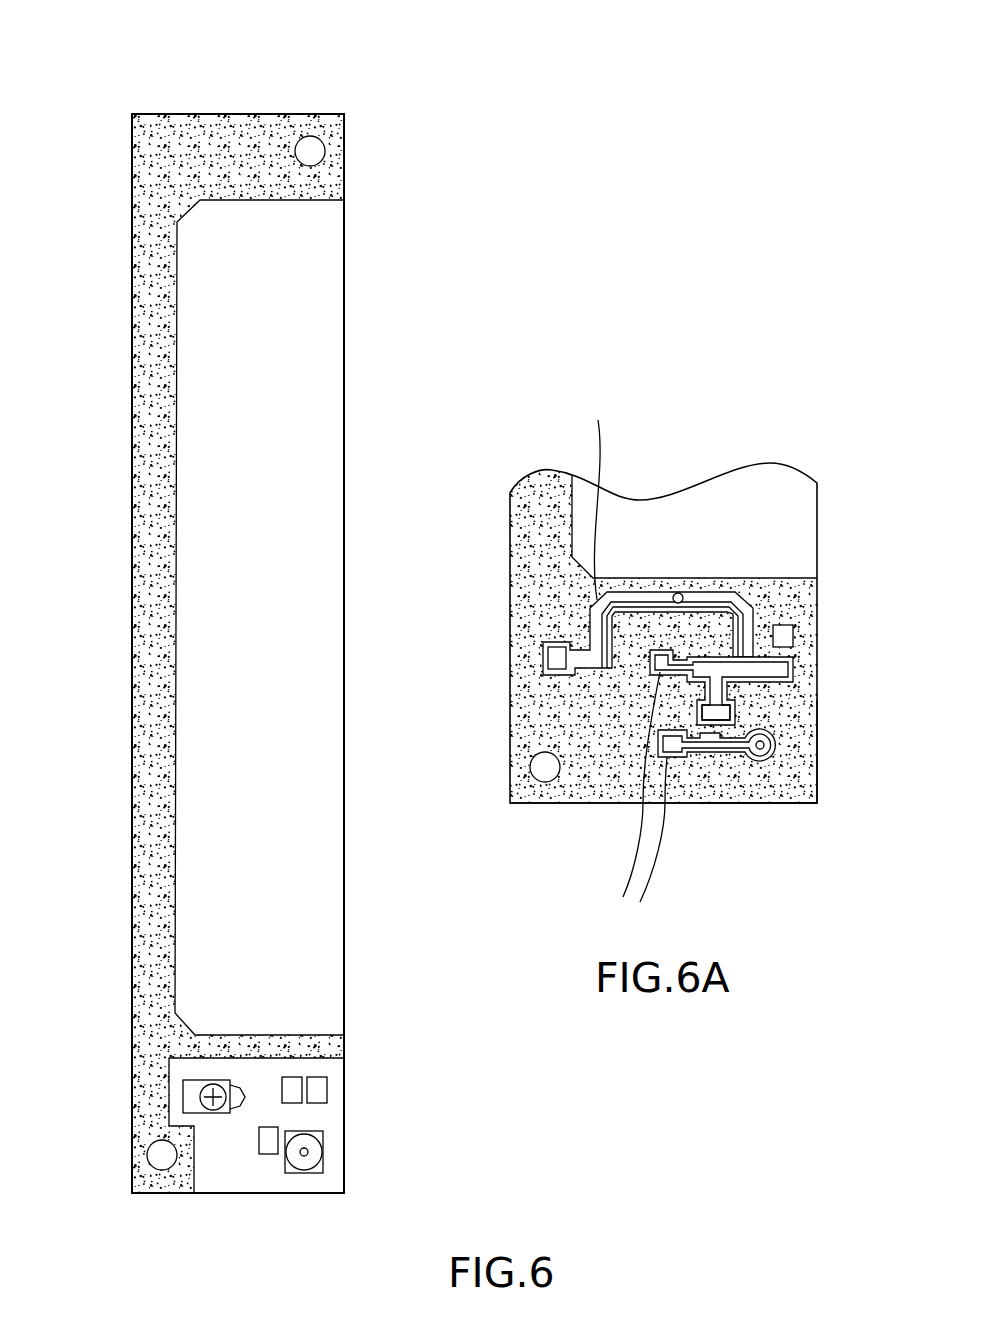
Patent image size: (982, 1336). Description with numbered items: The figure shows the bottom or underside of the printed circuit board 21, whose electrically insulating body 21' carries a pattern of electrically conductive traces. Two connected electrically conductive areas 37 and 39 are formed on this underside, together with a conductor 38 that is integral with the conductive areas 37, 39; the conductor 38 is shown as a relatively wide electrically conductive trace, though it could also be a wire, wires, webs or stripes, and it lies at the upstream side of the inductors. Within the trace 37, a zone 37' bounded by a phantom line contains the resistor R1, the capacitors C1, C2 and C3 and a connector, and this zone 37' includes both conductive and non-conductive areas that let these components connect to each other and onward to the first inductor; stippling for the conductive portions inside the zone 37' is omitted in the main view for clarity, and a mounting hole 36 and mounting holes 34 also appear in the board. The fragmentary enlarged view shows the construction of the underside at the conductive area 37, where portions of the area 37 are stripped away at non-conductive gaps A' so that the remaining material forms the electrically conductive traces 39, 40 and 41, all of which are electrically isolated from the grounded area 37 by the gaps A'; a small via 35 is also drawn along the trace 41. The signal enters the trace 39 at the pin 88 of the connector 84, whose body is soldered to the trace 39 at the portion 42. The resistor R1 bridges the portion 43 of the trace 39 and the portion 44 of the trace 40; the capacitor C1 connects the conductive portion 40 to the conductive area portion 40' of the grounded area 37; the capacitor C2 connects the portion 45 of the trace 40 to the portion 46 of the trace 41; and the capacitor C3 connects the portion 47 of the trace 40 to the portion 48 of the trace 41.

In FIG. 6, the printed circuit board 21 is at (227, 600).
In FIG. 6, the electrically conductive area 39 is at (237, 152).
In FIG. 6A, the electrically conductive area 39 is at (742, 752).
In FIG. 6, the mounting hole 36 is at (317, 153).
In FIG. 6, the conductor 38 is at (140, 487).
In FIG. 6A, the conductor 38 is at (540, 507).
In FIG. 6, the electrically conductive area 37 is at (182, 1143).
In FIG. 6A, the electrically conductive area 37 is at (608, 754).
In FIG. 6, the mounting hole 34 is at (173, 1168).
In FIG. 6A, the mounting hole 34 is at (543, 775).
In FIG. 6, the zone 37' is at (174, 1249).
In FIG. 6, the capacitor C2 is at (203, 1113).
In FIG. 6, the capacitor C3 is at (295, 1078).
In FIG. 6, the capacitor C1 is at (327, 1088).
In FIG. 6, the resistor R1 is at (270, 1155).
In FIG. 6, the connector 84 is at (324, 1192).
In FIG. 6A, the electrically insulating body 21' is at (663, 578).
In FIG. 6A, the non-conductive gaps A' is at (627, 659).
In FIG. 6A, the electrically conductive trace 41 is at (632, 597).
In FIG. 6A, the via 35 is at (680, 592).
In FIG. 6A, the conductive portion 48 is at (749, 636).
In FIG. 6A, the conductive area portion 40' is at (827, 586).
In FIG. 6A, the electrically conductive trace 40 is at (760, 658).
In FIG. 6A, the conductive portion 46 is at (597, 660).
In FIG. 6A, the conductive portion 47 is at (717, 712).
In FIG. 6A, the conductive portion 45 is at (655, 663).
In FIG. 6A, the conductive portion 43 is at (712, 740).
In FIG. 6A, the portion 42 is at (787, 747).
In FIG. 6A, the electrically conductive pin 88 is at (765, 757).
In FIG. 6A, the conductive portion 44 is at (812, 803).